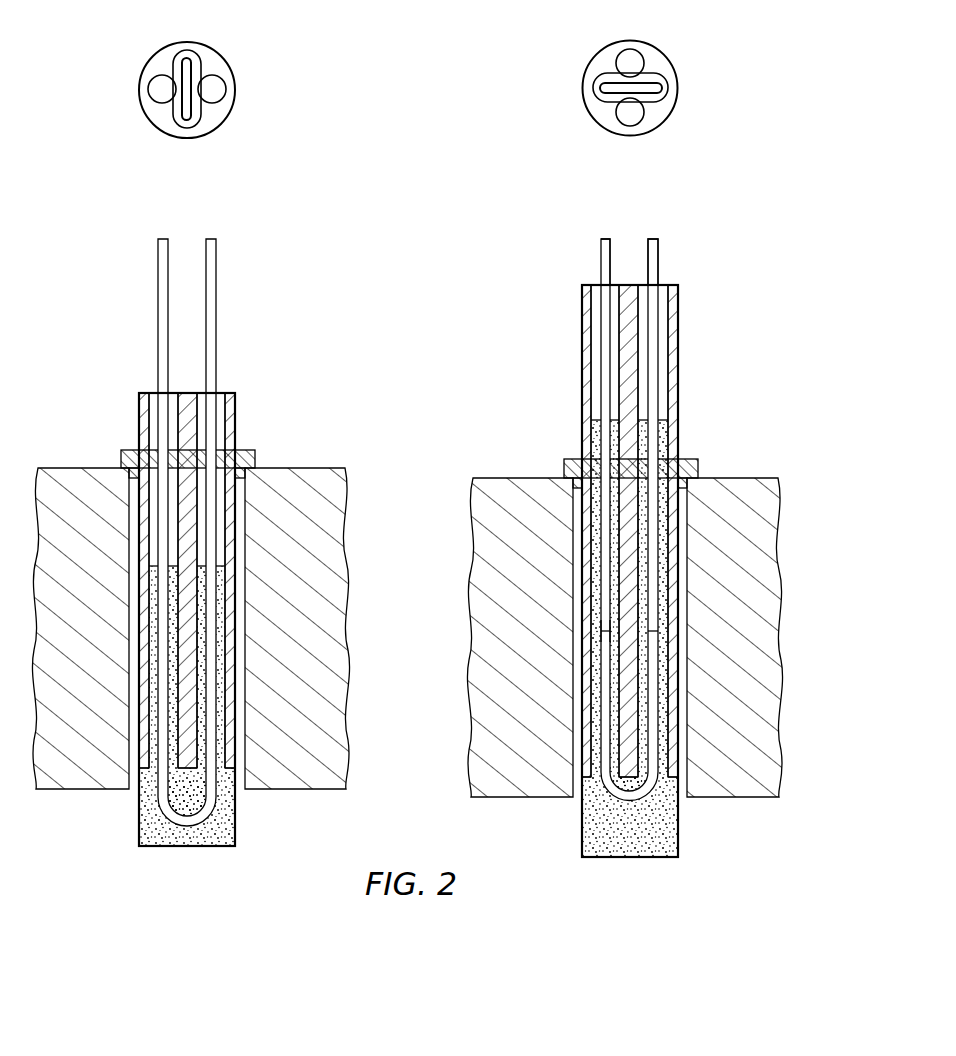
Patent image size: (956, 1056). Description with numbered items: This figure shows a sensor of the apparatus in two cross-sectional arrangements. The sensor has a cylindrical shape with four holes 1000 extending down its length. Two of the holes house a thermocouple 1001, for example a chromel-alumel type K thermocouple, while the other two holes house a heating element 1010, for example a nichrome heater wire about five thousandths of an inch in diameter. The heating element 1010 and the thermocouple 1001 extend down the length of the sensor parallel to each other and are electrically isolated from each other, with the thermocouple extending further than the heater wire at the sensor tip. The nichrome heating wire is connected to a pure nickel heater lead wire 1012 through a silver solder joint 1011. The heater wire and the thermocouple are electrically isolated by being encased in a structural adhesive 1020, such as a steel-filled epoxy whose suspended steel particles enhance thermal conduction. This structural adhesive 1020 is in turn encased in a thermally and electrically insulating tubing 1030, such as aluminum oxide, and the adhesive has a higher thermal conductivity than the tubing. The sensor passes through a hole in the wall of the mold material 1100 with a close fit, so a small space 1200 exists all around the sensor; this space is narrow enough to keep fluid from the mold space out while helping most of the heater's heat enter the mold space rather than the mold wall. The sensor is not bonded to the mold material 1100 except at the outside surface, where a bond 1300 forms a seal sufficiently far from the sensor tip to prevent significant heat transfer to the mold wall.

The holes 1000 is at (151, 94).
The thermocouple 1001 is at (212, 825).
The heating element 1010 is at (637, 812).
The silver solder joint 1011 is at (605, 645).
The heater lead wire 1012 is at (658, 256).
The structural adhesive 1020 is at (139, 833).
The insulating tubing 1030 is at (138, 413).
The mold material 1100 is at (284, 468).
The space 1200 is at (138, 574).
The bond 1300 is at (122, 457).